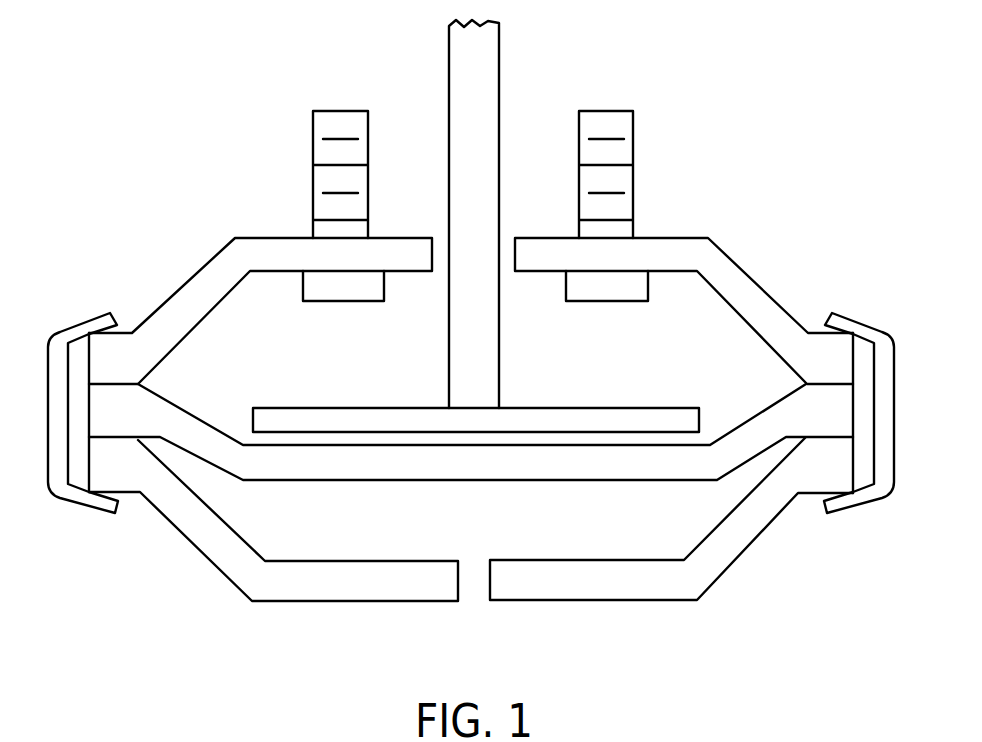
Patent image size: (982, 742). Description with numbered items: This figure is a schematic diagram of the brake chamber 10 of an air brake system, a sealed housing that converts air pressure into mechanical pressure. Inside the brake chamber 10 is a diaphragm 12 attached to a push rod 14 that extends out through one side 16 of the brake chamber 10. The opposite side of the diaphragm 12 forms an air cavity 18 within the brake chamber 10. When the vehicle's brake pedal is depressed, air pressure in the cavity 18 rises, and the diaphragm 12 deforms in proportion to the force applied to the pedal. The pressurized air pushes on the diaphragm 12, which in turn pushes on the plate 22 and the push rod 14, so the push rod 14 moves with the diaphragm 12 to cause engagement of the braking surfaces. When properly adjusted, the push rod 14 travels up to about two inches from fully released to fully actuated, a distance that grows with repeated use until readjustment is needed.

The brake chamber 10 is at (471, 312).
The diaphragm 12 is at (242, 465).
The push rod 14 is at (482, 85).
The side of the brake chamber 16 is at (685, 330).
The air cavity 18 is at (703, 500).
The plate 22 is at (302, 417).